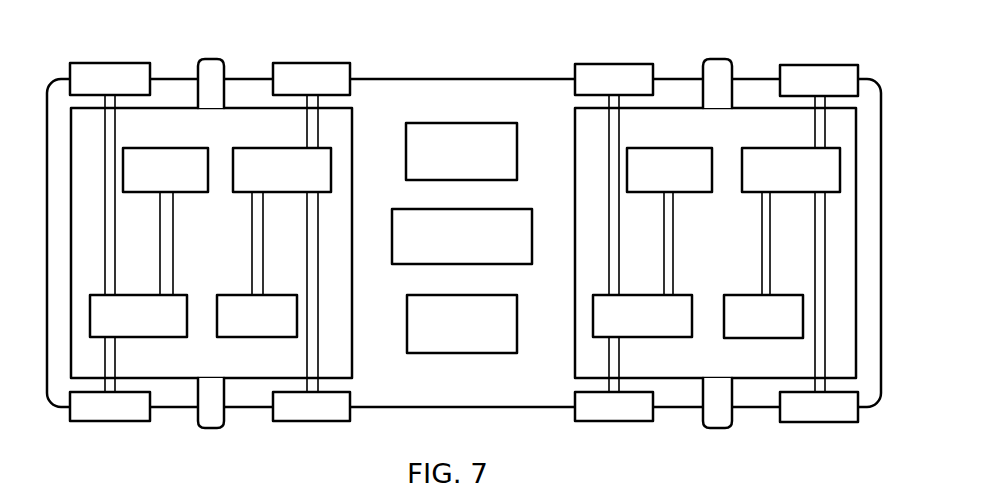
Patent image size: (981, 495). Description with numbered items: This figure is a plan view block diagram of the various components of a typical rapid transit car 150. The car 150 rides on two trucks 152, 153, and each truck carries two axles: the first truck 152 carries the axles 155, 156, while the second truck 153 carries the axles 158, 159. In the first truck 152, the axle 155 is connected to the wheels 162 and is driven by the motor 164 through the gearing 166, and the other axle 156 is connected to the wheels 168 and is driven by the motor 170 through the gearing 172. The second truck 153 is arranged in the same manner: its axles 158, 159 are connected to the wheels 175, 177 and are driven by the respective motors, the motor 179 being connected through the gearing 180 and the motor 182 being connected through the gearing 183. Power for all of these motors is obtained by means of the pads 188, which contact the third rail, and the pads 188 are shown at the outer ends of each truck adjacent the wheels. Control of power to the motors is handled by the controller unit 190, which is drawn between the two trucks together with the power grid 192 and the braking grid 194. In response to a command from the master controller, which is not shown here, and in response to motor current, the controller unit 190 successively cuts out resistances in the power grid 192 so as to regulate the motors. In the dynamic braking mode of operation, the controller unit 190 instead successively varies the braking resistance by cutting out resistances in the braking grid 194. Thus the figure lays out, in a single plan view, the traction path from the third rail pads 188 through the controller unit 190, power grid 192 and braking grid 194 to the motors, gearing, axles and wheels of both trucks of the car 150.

The rapid transit car 150 is at (480, 79).
The truck 152 is at (353, 127).
The truck 153 is at (574, 120).
The axle 155 is at (115, 131).
The axle 156 is at (306, 130).
The axle 158 is at (619, 132).
The axle 159 is at (815, 131).
The wheels 162 is at (149, 53).
The motor 164 is at (167, 147).
The gearing 166 is at (147, 338).
The wheels 168 is at (338, 64).
The motor 170 is at (257, 339).
The gearing 172 is at (252, 147).
The wheels 175 is at (641, 65).
The wheels 177 is at (838, 66).
The motor 179 is at (684, 147).
The gearing 180 is at (654, 338).
The motor 182 is at (768, 339).
The gearing 183 is at (752, 147).
The pads 188 is at (213, 59).
The controller unit 190 is at (520, 194).
The power grid 192 is at (483, 122).
The braking grid 194 is at (511, 295).